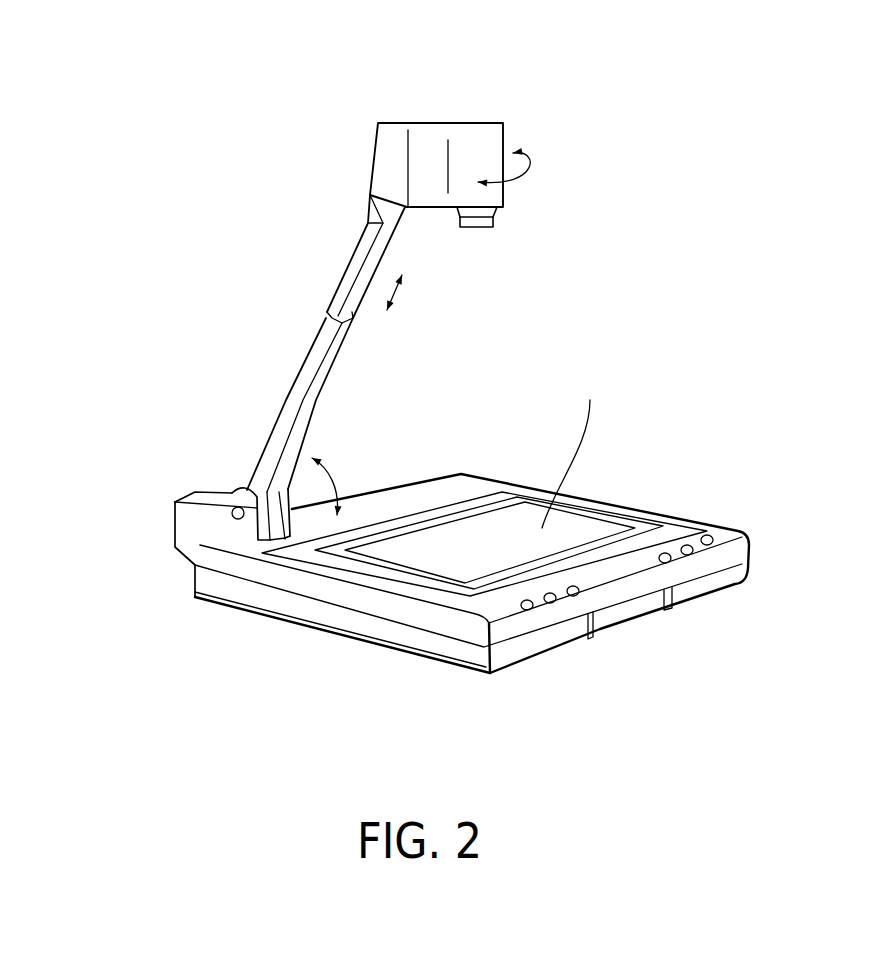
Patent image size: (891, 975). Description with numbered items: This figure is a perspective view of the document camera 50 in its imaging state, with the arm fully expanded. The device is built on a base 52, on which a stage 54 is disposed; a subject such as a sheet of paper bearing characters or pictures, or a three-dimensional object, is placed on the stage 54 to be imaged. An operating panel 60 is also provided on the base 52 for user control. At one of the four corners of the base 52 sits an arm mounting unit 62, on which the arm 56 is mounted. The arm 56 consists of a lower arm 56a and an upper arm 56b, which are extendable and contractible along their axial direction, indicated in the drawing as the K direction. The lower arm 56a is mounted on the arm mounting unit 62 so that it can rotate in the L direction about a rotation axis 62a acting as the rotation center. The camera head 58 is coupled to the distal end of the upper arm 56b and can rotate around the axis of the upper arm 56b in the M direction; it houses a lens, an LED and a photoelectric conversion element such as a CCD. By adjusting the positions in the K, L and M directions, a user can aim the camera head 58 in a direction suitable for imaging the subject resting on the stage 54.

The document camera 50 is at (675, 223).
The base 52 is at (438, 645).
The stage 54 is at (672, 537).
The arm 56 is at (237, 210).
The lower arm 56a is at (307, 365).
The upper arm 56b is at (352, 270).
The camera head 58 is at (468, 136).
The operating panel 60 is at (622, 577).
The arm mounting unit 62 is at (203, 496).
The rotation axis 62a is at (231, 514).